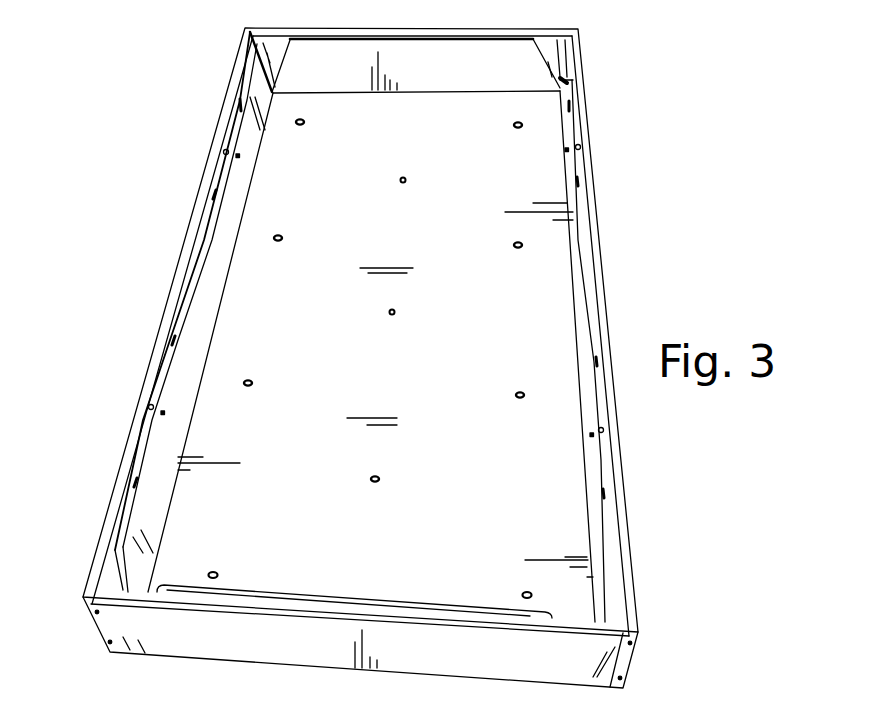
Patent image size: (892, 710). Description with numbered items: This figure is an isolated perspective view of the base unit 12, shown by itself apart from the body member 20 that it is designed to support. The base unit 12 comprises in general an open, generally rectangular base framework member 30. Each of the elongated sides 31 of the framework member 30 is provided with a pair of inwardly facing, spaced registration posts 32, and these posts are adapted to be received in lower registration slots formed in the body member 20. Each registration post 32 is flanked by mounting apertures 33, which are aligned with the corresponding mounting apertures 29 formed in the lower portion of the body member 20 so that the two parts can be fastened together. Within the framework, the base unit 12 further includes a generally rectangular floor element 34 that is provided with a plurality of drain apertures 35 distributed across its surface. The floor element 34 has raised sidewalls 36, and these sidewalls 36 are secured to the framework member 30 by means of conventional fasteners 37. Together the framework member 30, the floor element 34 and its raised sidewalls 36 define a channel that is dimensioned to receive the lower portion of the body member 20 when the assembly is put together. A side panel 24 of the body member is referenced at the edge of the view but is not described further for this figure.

The base unit 12 is at (650, 182).
The body member 20 is at (768, 709).
The side panel 24 is at (663, 706).
The mounting apertures 29 is at (472, 709).
The base framework member 30 is at (218, 640).
The elongated sides 31 is at (97, 532).
The registration posts 32 is at (223, 150).
The mounting apertures 33 is at (237, 100).
The floor element 34 is at (340, 462).
The drain apertures 35 is at (406, 178).
The raised sidewalls 36 is at (452, 78).
The fasteners 37 is at (240, 157).